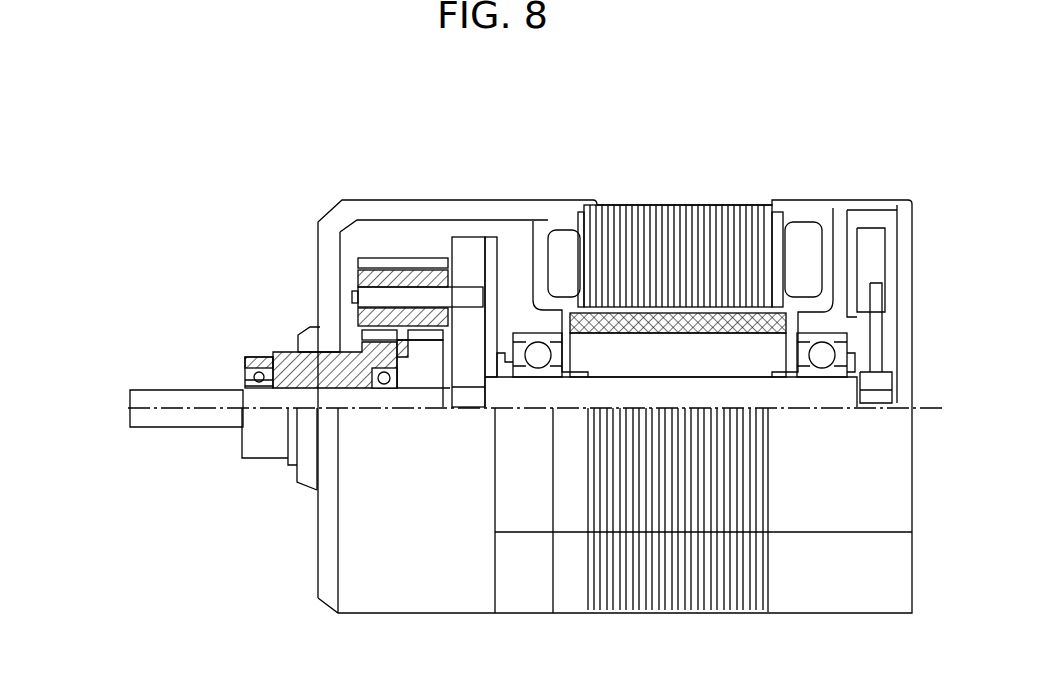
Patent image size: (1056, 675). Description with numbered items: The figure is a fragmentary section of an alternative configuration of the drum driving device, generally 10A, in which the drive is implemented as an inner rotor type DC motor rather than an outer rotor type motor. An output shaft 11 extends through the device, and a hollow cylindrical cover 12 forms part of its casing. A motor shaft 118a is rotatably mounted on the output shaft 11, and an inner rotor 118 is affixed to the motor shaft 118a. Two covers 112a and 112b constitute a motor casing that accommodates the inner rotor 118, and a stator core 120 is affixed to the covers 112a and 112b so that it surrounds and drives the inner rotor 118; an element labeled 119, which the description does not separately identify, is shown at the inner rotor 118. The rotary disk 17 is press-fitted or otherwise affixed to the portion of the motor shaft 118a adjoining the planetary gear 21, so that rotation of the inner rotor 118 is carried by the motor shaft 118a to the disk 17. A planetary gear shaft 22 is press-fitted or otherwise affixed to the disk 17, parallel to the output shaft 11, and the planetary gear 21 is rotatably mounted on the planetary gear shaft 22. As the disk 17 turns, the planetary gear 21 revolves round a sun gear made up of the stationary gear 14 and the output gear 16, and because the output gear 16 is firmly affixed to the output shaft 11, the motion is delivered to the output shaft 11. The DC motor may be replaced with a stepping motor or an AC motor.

The drum driving device 10A is at (952, 165).
The output shaft 11 is at (213, 418).
The cover 12 is at (332, 237).
The stationary gear 14 is at (292, 356).
The output gear 16 is at (423, 372).
The rotary disk 17 is at (470, 262).
The planetary gear 21 is at (376, 270).
The planetary gear shaft 22 is at (395, 300).
The cover 112a is at (522, 225).
The cover 112b is at (836, 208).
The inner rotor 118 is at (700, 352).
The motor shaft 118a is at (550, 390).
The magnet 119 is at (637, 315).
The stator core 120 is at (608, 257).